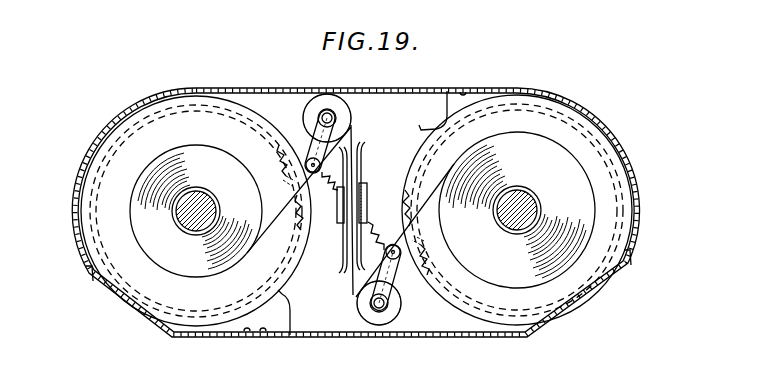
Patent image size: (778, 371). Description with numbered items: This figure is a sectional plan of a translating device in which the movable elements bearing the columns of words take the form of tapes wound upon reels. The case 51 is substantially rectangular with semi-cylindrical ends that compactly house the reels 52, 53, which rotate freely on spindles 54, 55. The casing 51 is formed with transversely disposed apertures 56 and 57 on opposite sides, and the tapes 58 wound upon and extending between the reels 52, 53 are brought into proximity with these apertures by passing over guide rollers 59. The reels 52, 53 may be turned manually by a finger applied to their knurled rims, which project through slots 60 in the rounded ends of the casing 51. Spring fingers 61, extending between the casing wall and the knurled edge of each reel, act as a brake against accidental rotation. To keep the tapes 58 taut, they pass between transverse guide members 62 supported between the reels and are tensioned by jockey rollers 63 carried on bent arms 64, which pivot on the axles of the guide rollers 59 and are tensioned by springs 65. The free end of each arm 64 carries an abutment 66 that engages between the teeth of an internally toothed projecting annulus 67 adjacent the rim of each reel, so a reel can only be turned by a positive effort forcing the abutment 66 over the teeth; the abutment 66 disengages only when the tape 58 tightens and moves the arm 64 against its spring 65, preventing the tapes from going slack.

The case 51 is at (518, 338).
The reel 52 is at (178, 125).
The reel 53 is at (585, 116).
The spindle 54 is at (196, 212).
The spindle 55 is at (532, 206).
The aperture 56 is at (384, 333).
The aperture 57 is at (330, 95).
The tape 58 is at (428, 186).
The guide roller 59 is at (314, 106).
The slot 60 is at (90, 272).
The spring finger 61 is at (446, 96).
The transverse guide member 62 is at (344, 258).
The jockey roller 63 is at (312, 160).
The bent arm 64 is at (325, 136).
The spring 65 is at (333, 182).
The abutment 66 is at (284, 170).
The internally toothed projecting annulus 67 is at (228, 100).